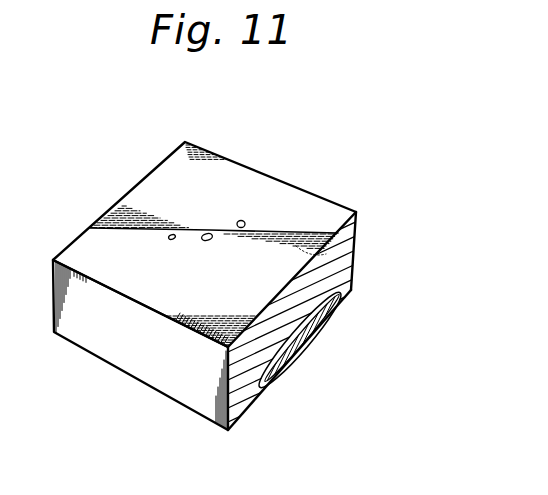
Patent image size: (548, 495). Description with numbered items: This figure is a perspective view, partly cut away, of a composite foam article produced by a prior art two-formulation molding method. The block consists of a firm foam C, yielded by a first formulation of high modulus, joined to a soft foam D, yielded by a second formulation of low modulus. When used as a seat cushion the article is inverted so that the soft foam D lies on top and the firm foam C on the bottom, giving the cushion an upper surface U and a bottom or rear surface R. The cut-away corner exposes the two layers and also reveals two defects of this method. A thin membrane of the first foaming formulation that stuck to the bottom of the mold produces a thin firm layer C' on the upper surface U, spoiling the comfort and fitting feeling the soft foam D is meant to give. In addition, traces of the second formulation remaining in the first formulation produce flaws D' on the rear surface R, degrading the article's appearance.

The bottom or rear surface R is at (153, 192).
The flaws D' is at (249, 186).
The firm foam C is at (320, 317).
The thin firm layer C' is at (308, 338).
The soft foam D is at (323, 339).
The upper surface U is at (264, 391).